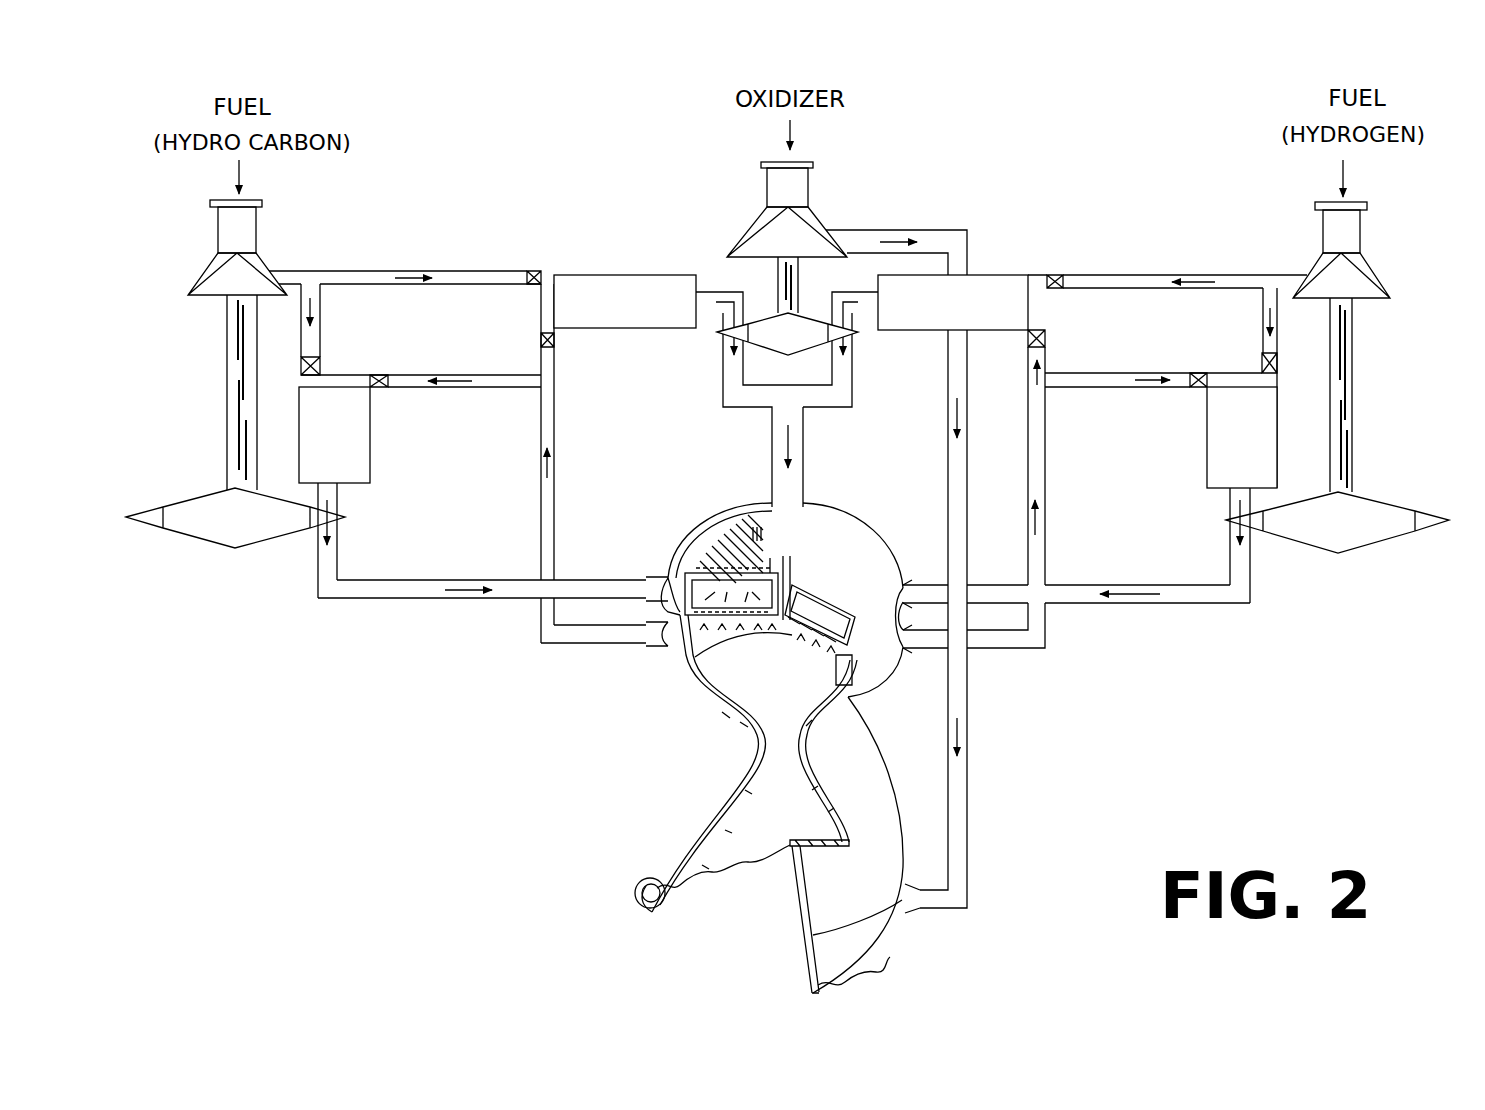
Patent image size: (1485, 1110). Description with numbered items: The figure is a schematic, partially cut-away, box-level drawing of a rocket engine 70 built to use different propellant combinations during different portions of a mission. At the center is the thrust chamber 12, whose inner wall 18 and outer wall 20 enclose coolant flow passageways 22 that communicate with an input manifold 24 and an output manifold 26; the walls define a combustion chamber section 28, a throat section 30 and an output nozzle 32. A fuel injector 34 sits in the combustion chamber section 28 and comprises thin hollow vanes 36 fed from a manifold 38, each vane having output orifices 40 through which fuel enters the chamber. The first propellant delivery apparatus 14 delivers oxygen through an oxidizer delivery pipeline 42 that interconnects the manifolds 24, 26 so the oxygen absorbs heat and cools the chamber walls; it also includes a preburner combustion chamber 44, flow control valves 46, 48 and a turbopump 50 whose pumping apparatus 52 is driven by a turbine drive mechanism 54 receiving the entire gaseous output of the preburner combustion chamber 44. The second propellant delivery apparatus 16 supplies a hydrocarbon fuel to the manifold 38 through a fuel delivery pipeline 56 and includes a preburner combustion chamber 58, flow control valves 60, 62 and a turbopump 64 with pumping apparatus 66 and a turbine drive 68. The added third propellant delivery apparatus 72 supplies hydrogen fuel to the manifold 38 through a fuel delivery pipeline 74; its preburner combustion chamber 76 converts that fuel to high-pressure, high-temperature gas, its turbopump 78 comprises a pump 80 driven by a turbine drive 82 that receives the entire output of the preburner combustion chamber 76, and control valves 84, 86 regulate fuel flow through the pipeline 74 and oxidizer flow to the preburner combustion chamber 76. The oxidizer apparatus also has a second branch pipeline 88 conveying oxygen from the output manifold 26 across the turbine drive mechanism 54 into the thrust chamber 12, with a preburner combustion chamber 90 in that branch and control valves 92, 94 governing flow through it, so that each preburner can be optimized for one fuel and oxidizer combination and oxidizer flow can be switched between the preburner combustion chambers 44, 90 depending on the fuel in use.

The thrust chamber 12 is at (758, 738).
The first propellant delivery apparatus 14 is at (962, 171).
The second propellant delivery apparatus 16 is at (331, 243).
The inner wall 18 is at (700, 824).
The outer wall 20 is at (700, 814).
The coolant flow passageways 22 is at (836, 841).
The input manifold 24 is at (646, 871).
The output manifold 26 is at (664, 651).
The combustion chamber section 28 is at (765, 643).
The throat section 30 is at (792, 747).
The output nozzle 32 is at (773, 915).
The fuel injector 34 is at (724, 531).
The thin hollow vanes 36 is at (776, 556).
The manifold 38 is at (670, 573).
The output orifices 40 is at (731, 591).
The oxidizer delivery pipeline 42 is at (557, 470).
The preburner combustion chamber 44 is at (606, 277).
The flow control valve 46 is at (532, 273).
The flow control valve 48 is at (557, 341).
The turbopump 50 is at (787, 258).
The pumping apparatus 52 is at (812, 206).
The turbine drive mechanism 54 is at (800, 318).
The fuel delivery pipeline 56 is at (322, 308).
The preburner combustion chamber 58 is at (372, 461).
The flow control valve 60 is at (322, 369).
The flow control valve 62 is at (389, 377).
The turbopump 64 is at (212, 381).
The pumping apparatus 66 is at (198, 279).
The turbine drive 68 is at (151, 513).
The rocket engine 70 is at (1265, 758).
The third propellant delivery apparatus 72 is at (1260, 269).
The fuel delivery pipeline 74 is at (1262, 316).
The preburner combustion chamber 76 is at (1207, 440).
The turbopump 78 is at (1355, 319).
The pump 80 is at (1374, 269).
The turbine drive 82 is at (1396, 506).
The control valve 84 is at (1195, 374).
The control valve 86 is at (1279, 363).
The second branch pipeline 88 is at (853, 388).
The preburner combustion chamber 90 is at (995, 279).
The control valve 92 is at (1059, 276).
The control valve 94 is at (1048, 340).